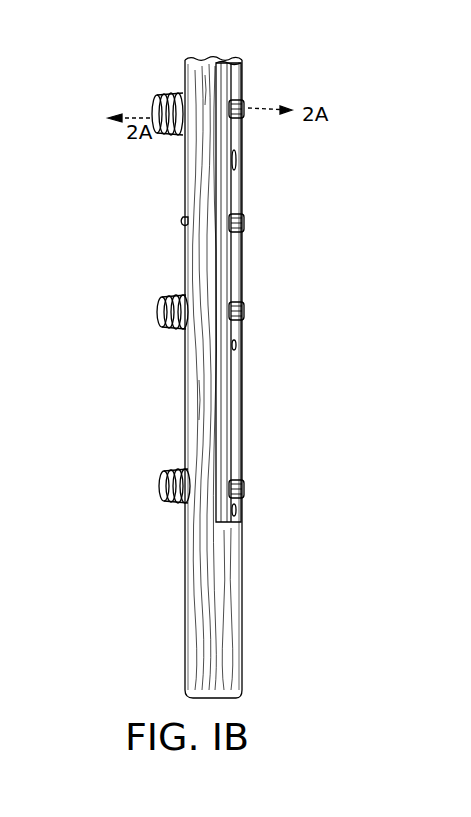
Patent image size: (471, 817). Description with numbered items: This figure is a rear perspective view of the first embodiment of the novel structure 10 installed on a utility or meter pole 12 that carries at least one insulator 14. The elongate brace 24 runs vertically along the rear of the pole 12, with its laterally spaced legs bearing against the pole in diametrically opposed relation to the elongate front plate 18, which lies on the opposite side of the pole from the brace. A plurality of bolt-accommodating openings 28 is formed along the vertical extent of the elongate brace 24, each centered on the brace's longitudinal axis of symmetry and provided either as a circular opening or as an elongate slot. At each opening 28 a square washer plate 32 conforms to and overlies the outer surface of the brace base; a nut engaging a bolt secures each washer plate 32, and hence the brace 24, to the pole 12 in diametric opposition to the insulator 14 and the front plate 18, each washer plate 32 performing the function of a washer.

The structure 10 is at (177, 55).
The pole 12 is at (186, 556).
The insulator 14 is at (152, 108).
The elongate front plate 18 is at (183, 202).
The elongate brace 24 is at (244, 413).
The bolt-accommodating opening 28 is at (246, 96).
The washer plate 32 is at (246, 118).